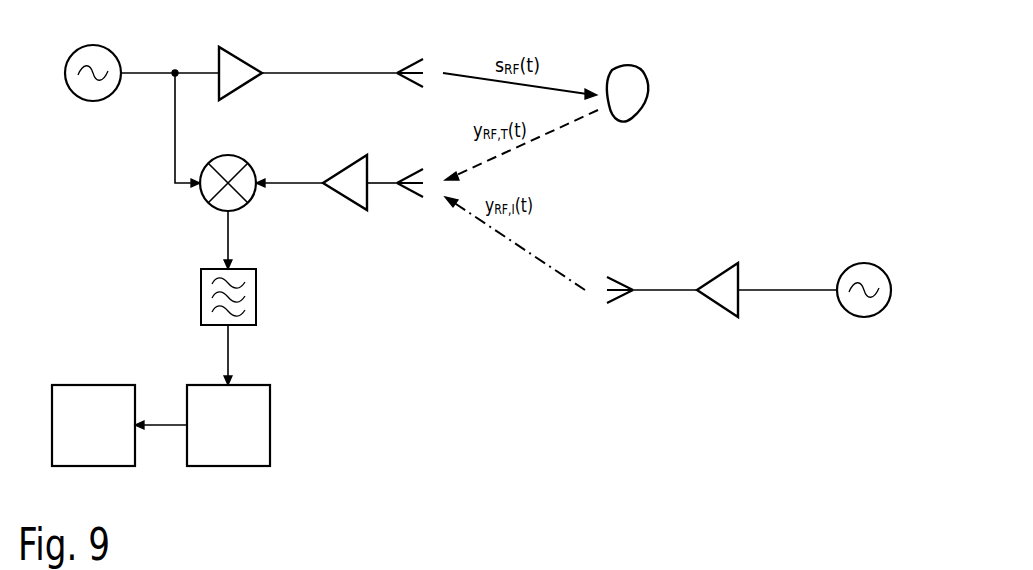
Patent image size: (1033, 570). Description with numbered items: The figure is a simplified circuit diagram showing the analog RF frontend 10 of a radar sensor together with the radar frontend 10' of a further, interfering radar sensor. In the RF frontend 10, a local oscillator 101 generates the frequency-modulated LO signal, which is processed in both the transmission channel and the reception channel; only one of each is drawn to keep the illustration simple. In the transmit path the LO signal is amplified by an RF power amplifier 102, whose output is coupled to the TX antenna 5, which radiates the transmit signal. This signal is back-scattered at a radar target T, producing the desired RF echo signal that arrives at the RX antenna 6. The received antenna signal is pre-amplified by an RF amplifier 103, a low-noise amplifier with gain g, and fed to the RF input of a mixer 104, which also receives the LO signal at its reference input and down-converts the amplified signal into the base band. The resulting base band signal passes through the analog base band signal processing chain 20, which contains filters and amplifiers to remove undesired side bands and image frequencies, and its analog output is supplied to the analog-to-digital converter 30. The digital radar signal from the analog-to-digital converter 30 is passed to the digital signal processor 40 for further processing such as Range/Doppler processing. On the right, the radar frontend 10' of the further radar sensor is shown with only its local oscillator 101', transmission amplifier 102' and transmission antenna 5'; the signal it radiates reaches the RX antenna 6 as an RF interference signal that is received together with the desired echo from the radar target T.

The local oscillator 101 is at (93, 55).
The RF power amplifier 102 is at (240, 54).
The TX antenna 5 is at (410, 48).
The RX antenna 6 is at (408, 172).
The RF amplifier 103 is at (353, 205).
The mixer 104 is at (241, 155).
The RF frontend 10 is at (213, 144).
The analog base band signal processing chain 20 is at (201, 297).
The analog-to-digital converter 30 is at (202, 425).
The digital signal processor 40 is at (93, 425).
The radar target T is at (627, 93).
The transmission antenna 5' is at (620, 267).
The amplifier 102' is at (721, 268).
The local oscillator 101' is at (867, 268).
The radar frontend 10' is at (771, 227).